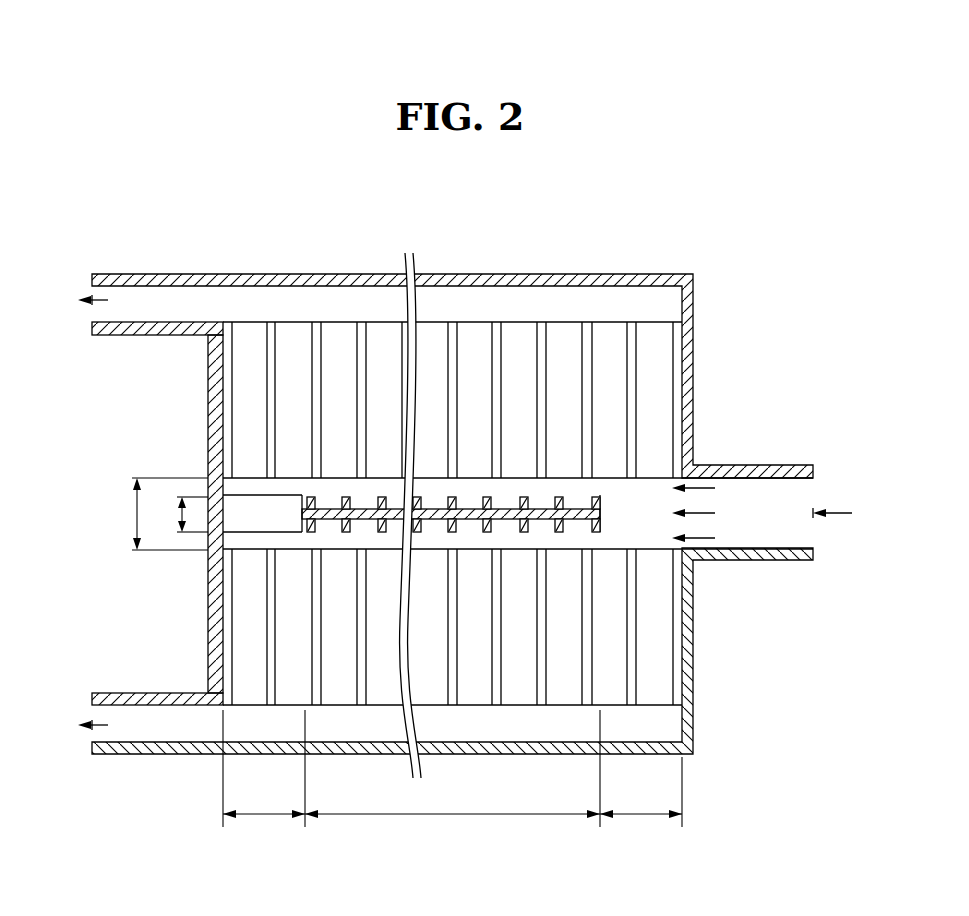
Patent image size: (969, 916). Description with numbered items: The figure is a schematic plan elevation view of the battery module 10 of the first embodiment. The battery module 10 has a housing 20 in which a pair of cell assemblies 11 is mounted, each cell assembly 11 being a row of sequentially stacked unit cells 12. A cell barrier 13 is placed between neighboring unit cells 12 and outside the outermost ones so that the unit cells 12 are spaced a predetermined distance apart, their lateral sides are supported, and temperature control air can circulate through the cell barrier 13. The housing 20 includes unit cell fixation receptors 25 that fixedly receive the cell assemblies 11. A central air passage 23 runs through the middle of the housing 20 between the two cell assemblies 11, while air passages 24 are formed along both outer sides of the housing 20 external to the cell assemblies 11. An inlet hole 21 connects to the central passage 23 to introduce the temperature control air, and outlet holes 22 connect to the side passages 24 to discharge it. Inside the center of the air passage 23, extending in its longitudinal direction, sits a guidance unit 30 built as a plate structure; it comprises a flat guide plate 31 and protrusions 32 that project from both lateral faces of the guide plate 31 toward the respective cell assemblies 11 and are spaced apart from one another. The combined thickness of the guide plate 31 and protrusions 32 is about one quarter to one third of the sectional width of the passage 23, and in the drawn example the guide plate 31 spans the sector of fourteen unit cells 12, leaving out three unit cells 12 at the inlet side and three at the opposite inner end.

The battery module 10 is at (770, 299).
The cell assembly 11 is at (262, 221).
The unit cell 12 is at (333, 332).
The cell barrier 13 is at (274, 330).
The housing 20 is at (480, 274).
The inlet hole 21 is at (813, 537).
The outlet hole 22 is at (92, 312).
The air passage 23 is at (228, 490).
The air passage 24 is at (560, 303).
The unit cell fixation receptor 25 is at (218, 393).
The guidance unit 30 is at (435, 485).
The guide plate 31 is at (393, 507).
The protrusion 32 is at (558, 497).